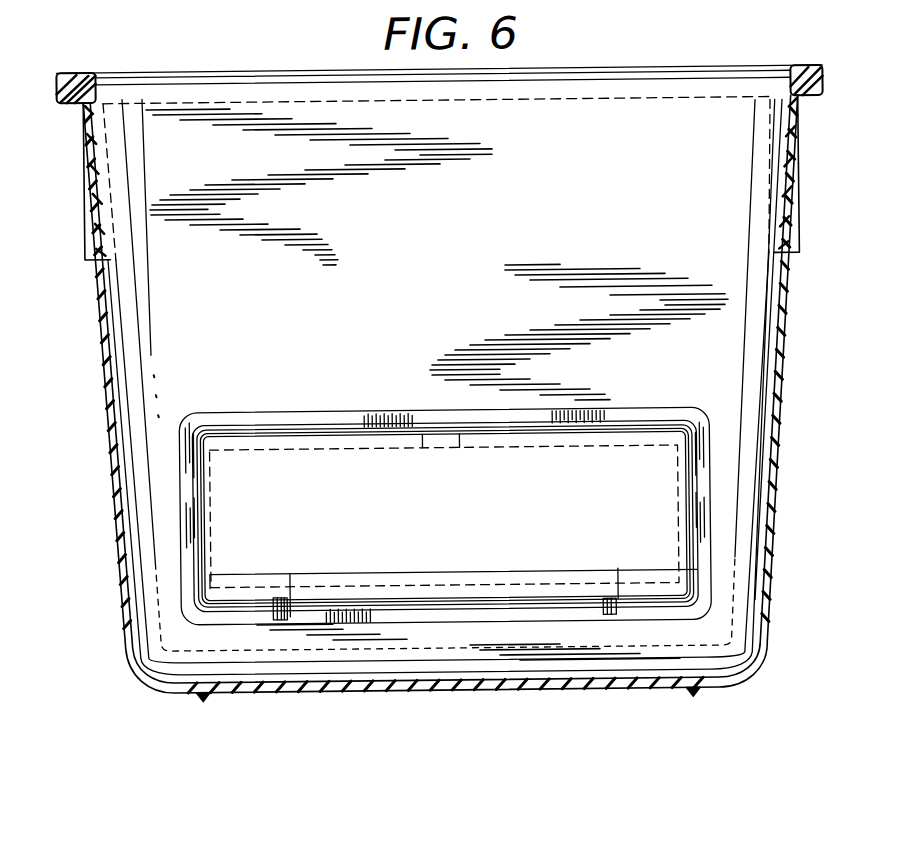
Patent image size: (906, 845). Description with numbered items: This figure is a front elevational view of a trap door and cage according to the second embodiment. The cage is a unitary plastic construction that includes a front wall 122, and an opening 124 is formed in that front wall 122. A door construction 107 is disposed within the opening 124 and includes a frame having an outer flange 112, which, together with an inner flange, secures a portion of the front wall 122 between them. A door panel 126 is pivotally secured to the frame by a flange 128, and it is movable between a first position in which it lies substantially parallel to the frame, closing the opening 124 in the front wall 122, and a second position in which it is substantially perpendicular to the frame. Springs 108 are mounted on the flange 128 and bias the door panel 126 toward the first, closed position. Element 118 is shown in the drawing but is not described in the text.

The door construction 107 is at (175, 533).
The springs 108 is at (285, 601).
The outer flange 112 is at (700, 543).
The label holder outer flange 118 is at (720, 455).
The front wall 122 is at (626, 110).
The opening 124 is at (216, 428).
The door panel 126 is at (641, 460).
The flange 128 is at (427, 597).